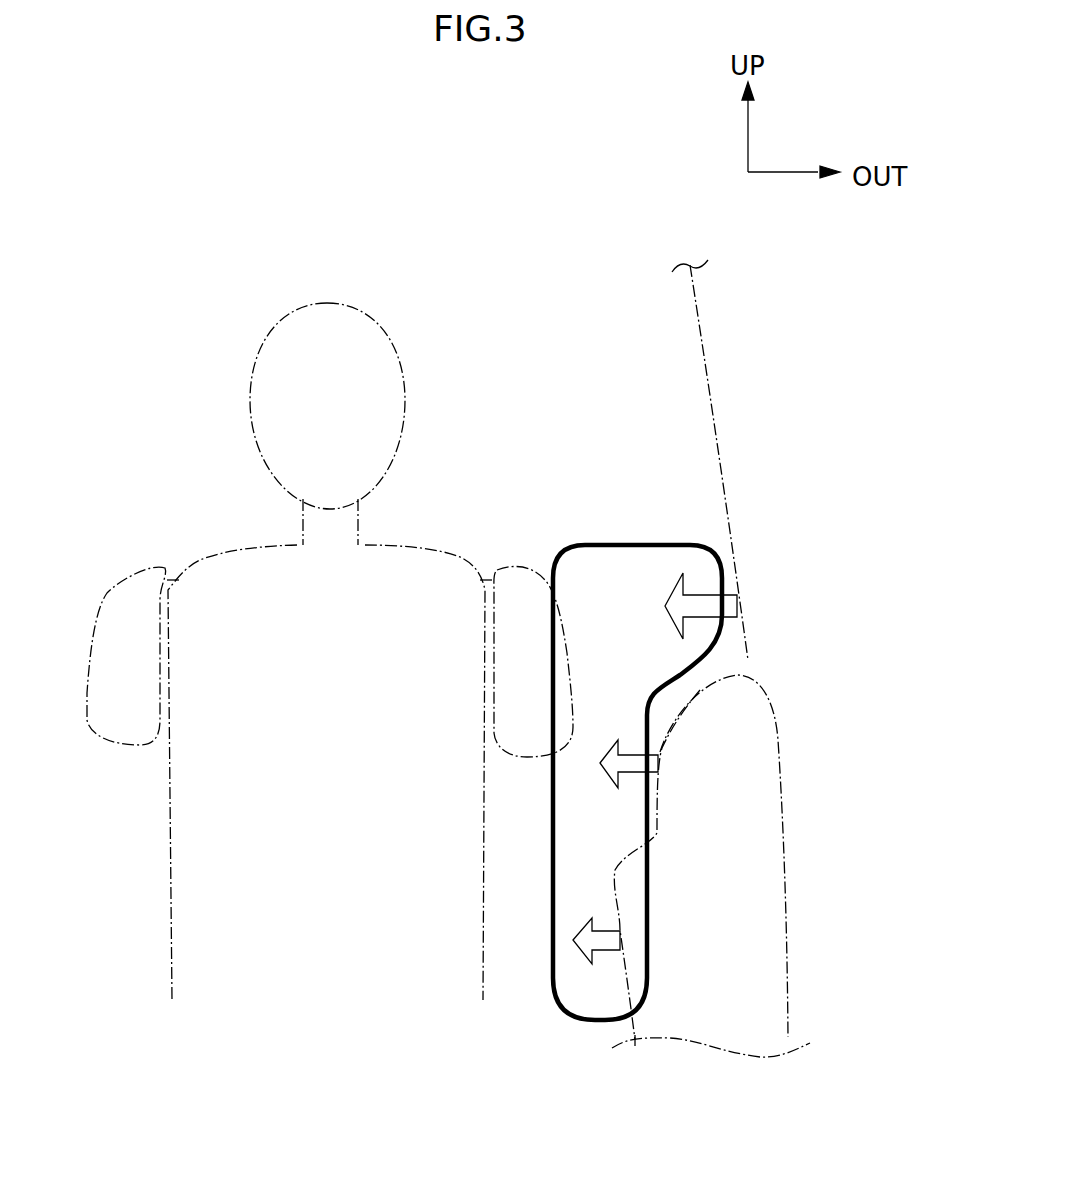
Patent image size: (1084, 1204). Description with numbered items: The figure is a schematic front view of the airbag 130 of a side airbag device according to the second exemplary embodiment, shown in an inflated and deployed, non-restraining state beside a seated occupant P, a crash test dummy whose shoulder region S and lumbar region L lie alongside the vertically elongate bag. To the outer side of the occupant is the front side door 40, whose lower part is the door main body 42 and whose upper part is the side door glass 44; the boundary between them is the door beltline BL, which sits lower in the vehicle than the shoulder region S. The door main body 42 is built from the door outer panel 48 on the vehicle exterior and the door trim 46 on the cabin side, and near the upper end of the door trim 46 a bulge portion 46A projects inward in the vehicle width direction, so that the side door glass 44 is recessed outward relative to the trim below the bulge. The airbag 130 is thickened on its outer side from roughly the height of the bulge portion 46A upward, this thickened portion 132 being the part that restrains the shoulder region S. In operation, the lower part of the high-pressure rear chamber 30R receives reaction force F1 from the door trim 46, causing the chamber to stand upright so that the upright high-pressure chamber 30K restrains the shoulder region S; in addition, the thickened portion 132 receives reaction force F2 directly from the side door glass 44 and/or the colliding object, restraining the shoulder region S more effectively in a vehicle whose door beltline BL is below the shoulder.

The occupant P is at (340, 300).
The shoulder region S is at (525, 585).
The lumbar region L is at (460, 923).
The airbag 130 is at (622, 538).
The rear chamber 30R is at (690, 670).
The high-pressure chamber 30K is at (700, 732).
The portion 132 is at (727, 630).
The front side door 40 is at (760, 582).
The side door glass 44 is at (713, 407).
The door trim 46 is at (627, 982).
The bulge portion 46A is at (683, 705).
The door outer panel 48 is at (780, 792).
The door main body 42 is at (756, 866).
The door beltline BL is at (742, 678).
The reaction force F1 is at (613, 852).
The reaction force F2 is at (683, 606).